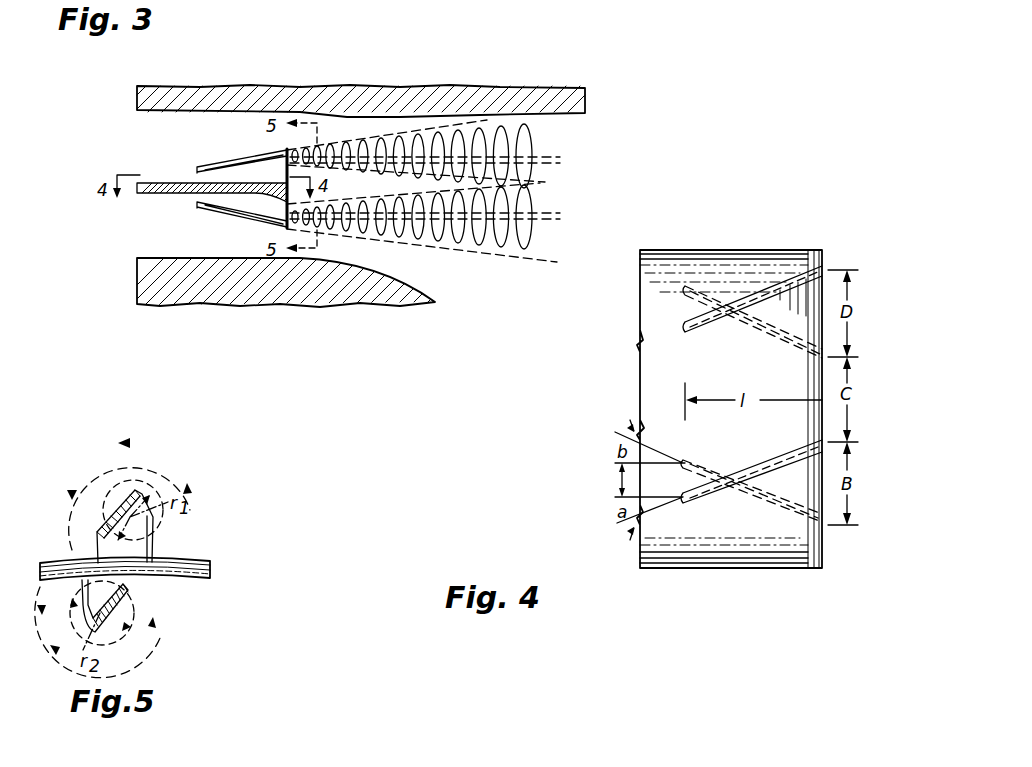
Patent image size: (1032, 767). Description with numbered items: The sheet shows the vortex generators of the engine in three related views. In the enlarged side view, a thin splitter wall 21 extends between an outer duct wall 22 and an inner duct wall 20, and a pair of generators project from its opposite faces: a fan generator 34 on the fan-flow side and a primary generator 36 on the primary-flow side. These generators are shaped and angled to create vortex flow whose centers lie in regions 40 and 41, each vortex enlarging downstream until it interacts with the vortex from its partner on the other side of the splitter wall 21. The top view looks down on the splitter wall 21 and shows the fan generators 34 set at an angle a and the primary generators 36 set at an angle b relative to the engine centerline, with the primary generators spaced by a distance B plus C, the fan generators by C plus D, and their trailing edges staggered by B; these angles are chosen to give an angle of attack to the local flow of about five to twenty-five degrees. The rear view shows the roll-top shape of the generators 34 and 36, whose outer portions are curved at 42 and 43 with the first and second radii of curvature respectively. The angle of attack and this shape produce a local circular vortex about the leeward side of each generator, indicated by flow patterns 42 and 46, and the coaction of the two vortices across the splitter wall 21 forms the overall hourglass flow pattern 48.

In FIG. 3, the lower wall 20 is at (167, 233).
In FIG. 3, the splitter wall 21 is at (180, 183).
In FIG. 4, the splitter wall 21 is at (640, 372).
In FIG. 5, the splitter wall 21 is at (210, 563).
In FIG. 3, the upper wall 22 is at (167, 143).
In FIG. 3, the fan generator 34 is at (228, 160).
In FIG. 4, the fan generator 34 is at (753, 306).
In FIG. 5, the fan generator 34 is at (153, 541).
In FIG. 3, the primary generator 36 is at (212, 211).
In FIG. 4, the primary generator 36 is at (766, 337).
In FIG. 5, the primary generator 36 is at (132, 593).
In FIG. 3, the vortex flow center region 40 is at (552, 160).
In FIG. 3, the vortex flow center region 41 is at (552, 221).
In FIG. 5, the curved outer portion 42 is at (140, 477).
In FIG. 5, the curved outer portion 43 is at (80, 614).
In FIG. 5, the local vortex flow pattern 46 is at (153, 620).
In FIG. 5, the hourglass flow pattern 48 is at (190, 512).